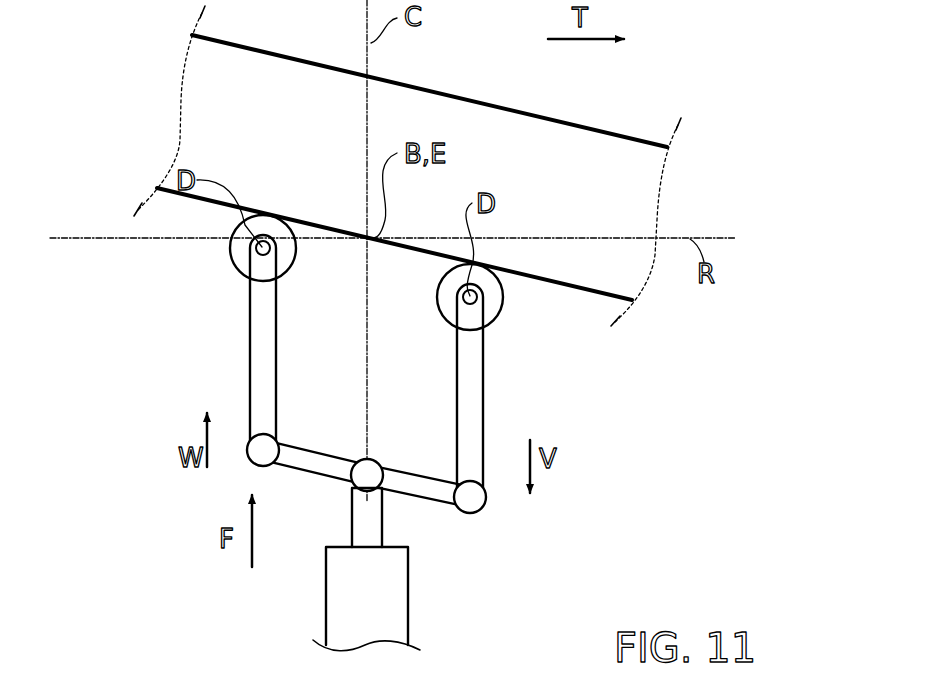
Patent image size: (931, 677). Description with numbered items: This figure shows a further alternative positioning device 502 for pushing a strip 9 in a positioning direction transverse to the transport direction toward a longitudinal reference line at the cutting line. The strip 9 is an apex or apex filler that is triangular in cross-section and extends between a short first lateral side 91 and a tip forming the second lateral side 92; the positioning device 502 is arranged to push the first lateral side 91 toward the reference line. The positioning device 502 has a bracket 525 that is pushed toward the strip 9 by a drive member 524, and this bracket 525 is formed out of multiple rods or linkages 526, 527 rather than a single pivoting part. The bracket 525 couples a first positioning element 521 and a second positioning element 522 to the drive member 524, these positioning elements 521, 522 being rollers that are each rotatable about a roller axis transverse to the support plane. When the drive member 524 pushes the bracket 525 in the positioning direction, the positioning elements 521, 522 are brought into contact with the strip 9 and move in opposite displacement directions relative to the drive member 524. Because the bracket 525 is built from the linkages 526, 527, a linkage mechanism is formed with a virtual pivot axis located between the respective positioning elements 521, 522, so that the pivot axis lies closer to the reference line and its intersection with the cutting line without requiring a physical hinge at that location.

The strip 9 is at (537, 141).
The first lateral side 91 is at (583, 293).
The second lateral side 92 is at (287, 57).
The positioning device 502 is at (166, 512).
The first positioning element 521 is at (443, 308).
The second positioning element 522 is at (240, 260).
The drive member 524 is at (335, 603).
The bracket 525 is at (433, 495).
The linkage 526 is at (472, 397).
The linkage 527 is at (262, 365).